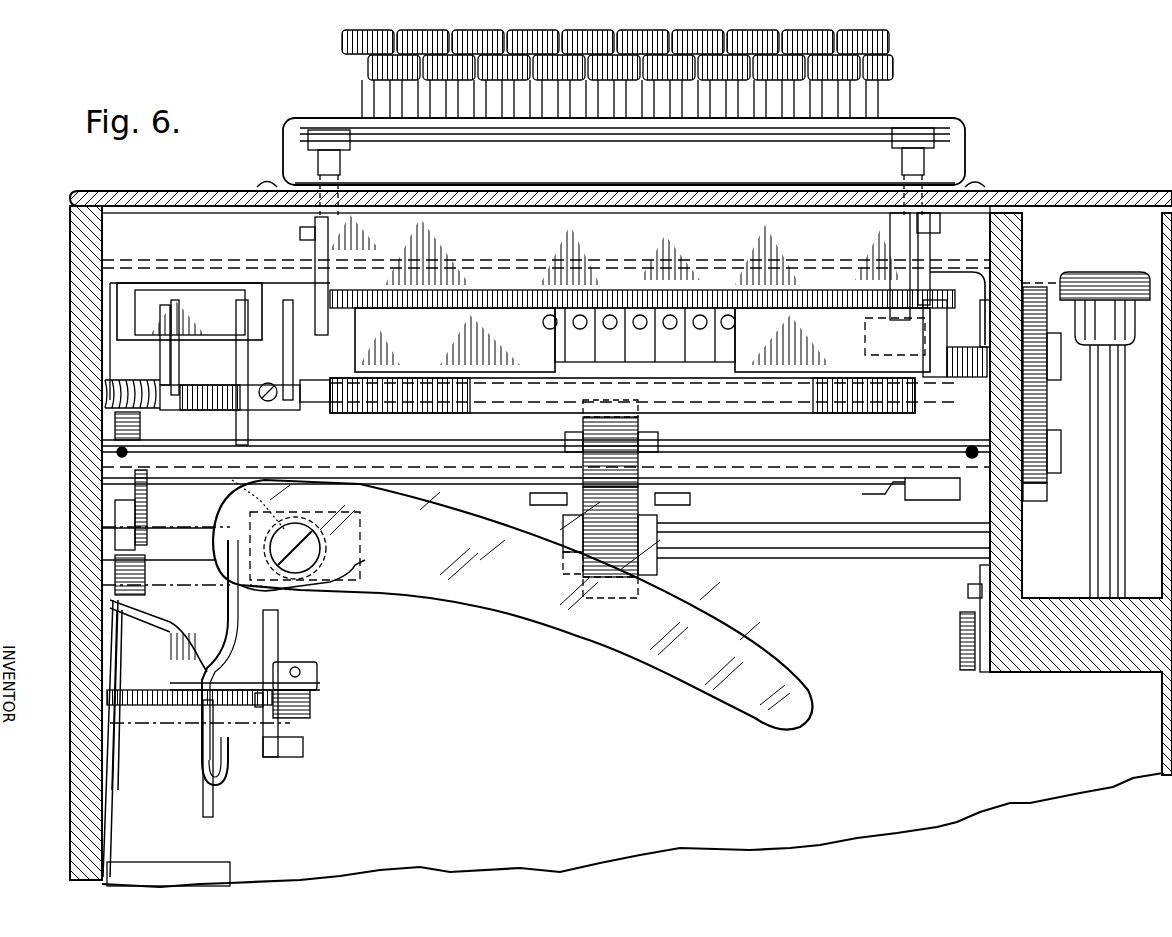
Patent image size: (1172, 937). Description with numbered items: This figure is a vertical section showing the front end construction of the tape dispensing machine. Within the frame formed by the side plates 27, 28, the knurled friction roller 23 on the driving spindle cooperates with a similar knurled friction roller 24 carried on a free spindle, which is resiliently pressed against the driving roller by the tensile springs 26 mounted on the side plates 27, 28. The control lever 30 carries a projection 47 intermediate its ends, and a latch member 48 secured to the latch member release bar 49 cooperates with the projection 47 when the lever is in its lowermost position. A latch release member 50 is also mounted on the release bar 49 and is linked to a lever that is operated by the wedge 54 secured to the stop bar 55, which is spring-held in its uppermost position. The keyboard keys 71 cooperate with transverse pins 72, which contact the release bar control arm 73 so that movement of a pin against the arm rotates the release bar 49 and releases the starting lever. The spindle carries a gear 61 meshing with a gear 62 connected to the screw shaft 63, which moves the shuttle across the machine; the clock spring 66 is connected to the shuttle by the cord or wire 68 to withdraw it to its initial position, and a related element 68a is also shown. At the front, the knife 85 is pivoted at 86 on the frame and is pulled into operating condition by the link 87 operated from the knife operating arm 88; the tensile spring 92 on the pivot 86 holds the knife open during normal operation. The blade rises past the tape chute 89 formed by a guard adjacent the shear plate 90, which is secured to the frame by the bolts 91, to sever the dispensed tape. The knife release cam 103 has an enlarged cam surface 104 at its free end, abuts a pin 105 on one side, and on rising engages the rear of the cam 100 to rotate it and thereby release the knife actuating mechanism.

The keys 71 is at (362, 97).
The stop bar 55 is at (720, 140).
The control lever 30 is at (112, 293).
The latch member 48 is at (165, 305).
The projection 47 is at (178, 340).
The latch release member 50 is at (300, 320).
The transverse pins 72 is at (610, 315).
The release bar control arm 73 is at (642, 340).
The wedge 54 is at (890, 243).
The clock spring 66 is at (1088, 305).
The cord or wire 68 is at (1030, 283).
The cap 68a is at (1108, 300).
The gear 61 is at (1045, 485).
The gear 62 is at (1045, 378).
The latch member release bar 49 is at (208, 398).
The screw shaft 63 is at (978, 378).
The knurled friction roller 23 is at (640, 440).
The knurled friction roller 24 is at (625, 530).
The bolts 91 is at (127, 457).
The tape chute 89 is at (880, 488).
The shear plate 90 is at (905, 482).
The knife 85 is at (742, 648).
The tensile spring 92 is at (330, 530).
The pivot 86 is at (330, 560).
The link 87 is at (228, 612).
The knife release cam 103 is at (280, 650).
The pin 105 is at (317, 688).
The cam 100 is at (310, 712).
The enlarged cam surface 104 is at (300, 750).
The knife operating arm 88 is at (213, 806).
The side plate 27 is at (118, 772).
The tensile springs 26 is at (112, 822).
The side plate 28 is at (1165, 705).